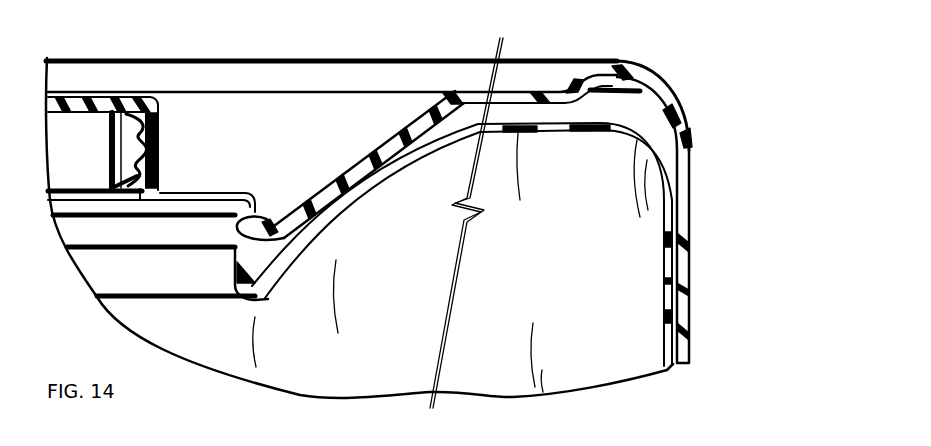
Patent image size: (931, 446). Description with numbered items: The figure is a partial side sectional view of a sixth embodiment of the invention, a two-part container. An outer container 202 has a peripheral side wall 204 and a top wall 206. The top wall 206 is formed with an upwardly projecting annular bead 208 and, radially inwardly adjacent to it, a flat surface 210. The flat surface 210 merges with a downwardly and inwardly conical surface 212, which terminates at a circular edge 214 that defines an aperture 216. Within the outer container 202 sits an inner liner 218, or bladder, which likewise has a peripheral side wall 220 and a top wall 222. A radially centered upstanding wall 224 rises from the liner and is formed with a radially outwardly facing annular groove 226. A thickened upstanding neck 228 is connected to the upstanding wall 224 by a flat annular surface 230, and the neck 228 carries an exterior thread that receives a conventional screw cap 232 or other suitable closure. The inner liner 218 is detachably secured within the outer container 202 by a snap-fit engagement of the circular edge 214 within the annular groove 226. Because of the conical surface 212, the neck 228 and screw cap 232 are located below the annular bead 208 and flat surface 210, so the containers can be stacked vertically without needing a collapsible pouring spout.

The outer container 202 is at (690, 252).
The peripheral side wall 204 is at (691, 163).
The top wall 206 is at (549, 60).
The annular bead 208 is at (643, 70).
The flat surface 210 is at (463, 92).
The conical surface 212 is at (377, 155).
The circular edge 214 is at (270, 217).
The aperture 216 is at (140, 267).
The inner liner 218 is at (662, 308).
The peripheral side wall 220 is at (668, 233).
The top wall 222 is at (573, 128).
The upstanding wall 224 is at (236, 264).
The annular groove 226 is at (244, 237).
The neck 228 is at (124, 153).
The annular surface 230 is at (184, 197).
The screw cap 232 is at (153, 150).